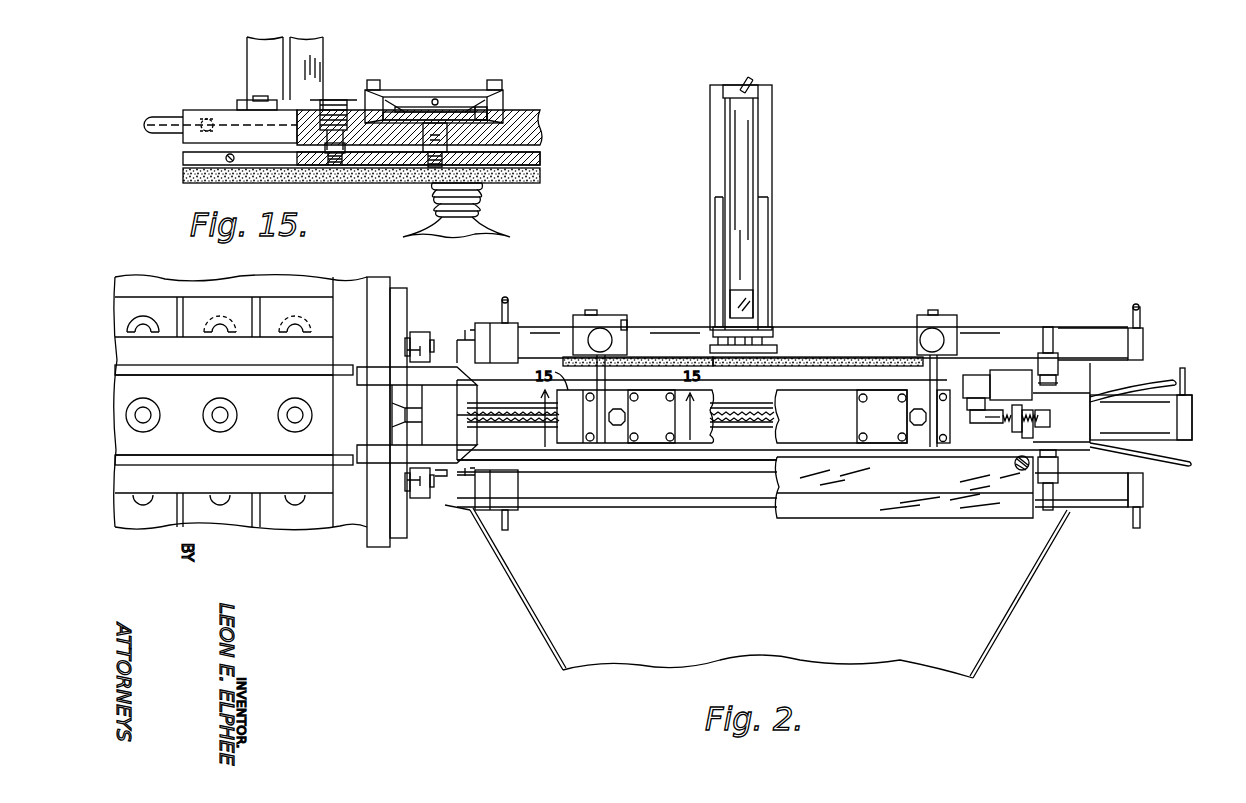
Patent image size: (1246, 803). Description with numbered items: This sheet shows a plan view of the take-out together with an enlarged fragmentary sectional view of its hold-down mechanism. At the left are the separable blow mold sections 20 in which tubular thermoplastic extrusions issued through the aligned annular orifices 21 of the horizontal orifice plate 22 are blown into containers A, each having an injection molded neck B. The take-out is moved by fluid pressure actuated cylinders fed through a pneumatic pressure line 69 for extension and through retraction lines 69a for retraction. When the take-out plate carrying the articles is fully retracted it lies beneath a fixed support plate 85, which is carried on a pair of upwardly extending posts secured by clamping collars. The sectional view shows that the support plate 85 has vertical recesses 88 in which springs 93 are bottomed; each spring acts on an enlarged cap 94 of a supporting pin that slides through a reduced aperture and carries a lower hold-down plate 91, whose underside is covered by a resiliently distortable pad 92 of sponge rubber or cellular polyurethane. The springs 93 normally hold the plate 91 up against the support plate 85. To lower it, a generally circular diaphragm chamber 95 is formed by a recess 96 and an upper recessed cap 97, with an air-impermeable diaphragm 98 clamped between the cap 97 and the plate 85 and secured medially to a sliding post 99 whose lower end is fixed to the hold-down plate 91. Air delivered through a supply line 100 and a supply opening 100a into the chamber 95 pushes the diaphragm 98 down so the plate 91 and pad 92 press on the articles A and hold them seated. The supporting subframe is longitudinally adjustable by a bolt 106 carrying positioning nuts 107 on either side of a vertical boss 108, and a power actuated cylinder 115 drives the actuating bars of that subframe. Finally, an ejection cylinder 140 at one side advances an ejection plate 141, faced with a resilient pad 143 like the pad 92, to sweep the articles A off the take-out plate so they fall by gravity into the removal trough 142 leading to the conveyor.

In FIG. 2, the blow mold sections 20 is at (218, 307).
In FIG. 2, the annular orifices 21 is at (228, 410).
In FIG. 2, the horizontal orifice plate 22 is at (240, 402).
In FIG. 2, the pneumatic pressure line 69 is at (1141, 313).
In FIG. 2, the retraction lines 69a is at (510, 306).
In FIG. 15, the fixed support plate 85 is at (540, 118).
In FIG. 2, the fixed support plate 85 is at (925, 447).
In FIG. 15, the vertical recesses 88 is at (302, 112).
In FIG. 15, the lower hold-down plate 91 is at (540, 156).
In FIG. 15, the resiliently distortable pad 92 is at (540, 176).
In FIG. 15, the springs 93 is at (335, 104).
In FIG. 15, the enlarged cap 94 is at (357, 98).
In FIG. 15, the diaphragm chamber 95 is at (455, 106).
In FIG. 15, the recess 96 is at (512, 115).
In FIG. 15, the upper recessed cap 97 is at (500, 102).
In FIG. 15, the air-impermeable diaphragm 98 is at (472, 100).
In FIG. 15, the sliding post 99 is at (432, 168).
In FIG. 15, the supply line 100 is at (163, 118).
In FIG. 15, the supply opening 100a is at (435, 98).
In FIG. 2, the bolt 106 is at (1048, 419).
In FIG. 2, the positioning nuts 107 is at (1017, 410).
In FIG. 2, the vertical boss 108 is at (1030, 433).
In FIG. 2, the power actuated cylinder 115 is at (1192, 417).
In FIG. 2, the ejection cylinder 140 is at (768, 171).
In FIG. 2, the ejection plate 141 is at (830, 356).
In FIG. 2, the removal trough 142 is at (1030, 600).
In FIG. 2, the resilient pad 143 is at (746, 366).
In FIG. 15, the containers A is at (458, 229).
In FIG. 15, the necks B is at (480, 197).